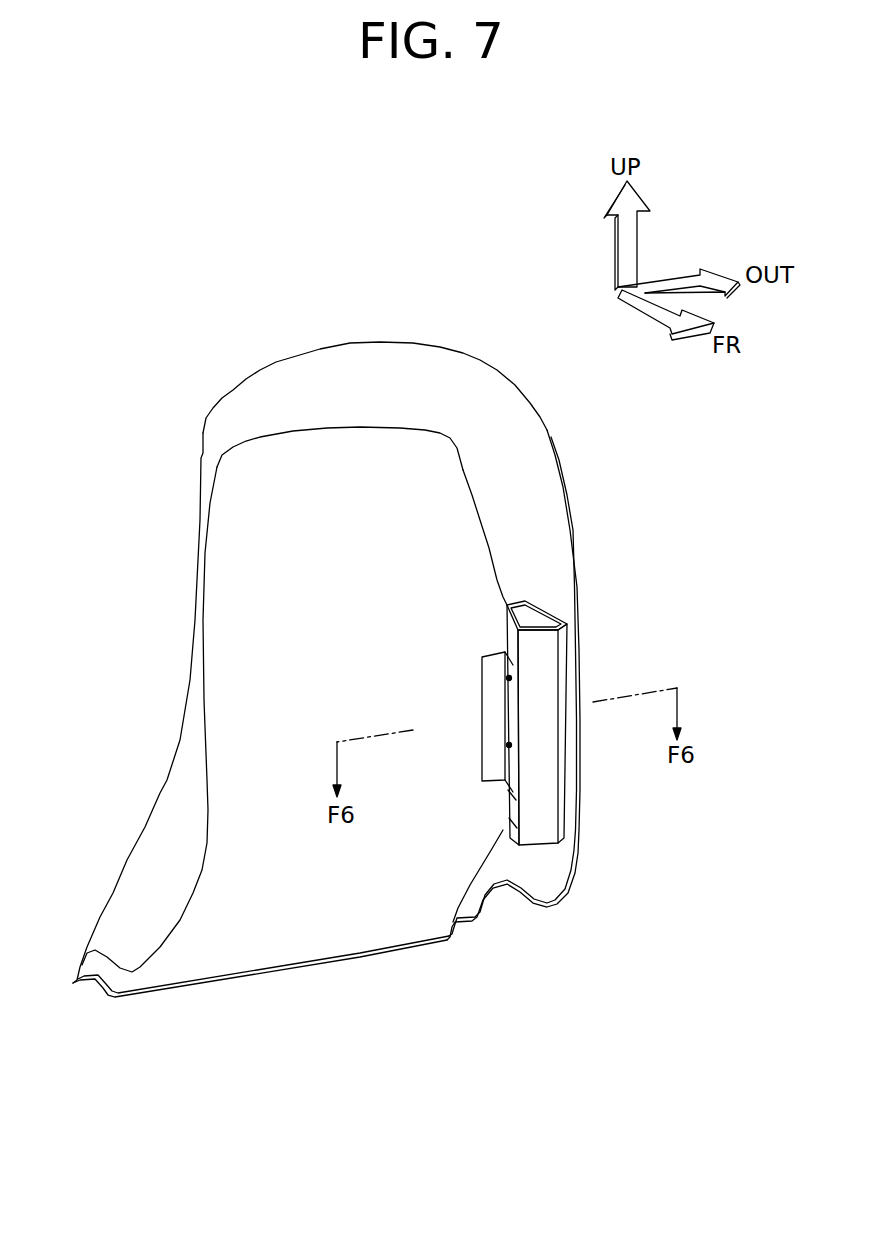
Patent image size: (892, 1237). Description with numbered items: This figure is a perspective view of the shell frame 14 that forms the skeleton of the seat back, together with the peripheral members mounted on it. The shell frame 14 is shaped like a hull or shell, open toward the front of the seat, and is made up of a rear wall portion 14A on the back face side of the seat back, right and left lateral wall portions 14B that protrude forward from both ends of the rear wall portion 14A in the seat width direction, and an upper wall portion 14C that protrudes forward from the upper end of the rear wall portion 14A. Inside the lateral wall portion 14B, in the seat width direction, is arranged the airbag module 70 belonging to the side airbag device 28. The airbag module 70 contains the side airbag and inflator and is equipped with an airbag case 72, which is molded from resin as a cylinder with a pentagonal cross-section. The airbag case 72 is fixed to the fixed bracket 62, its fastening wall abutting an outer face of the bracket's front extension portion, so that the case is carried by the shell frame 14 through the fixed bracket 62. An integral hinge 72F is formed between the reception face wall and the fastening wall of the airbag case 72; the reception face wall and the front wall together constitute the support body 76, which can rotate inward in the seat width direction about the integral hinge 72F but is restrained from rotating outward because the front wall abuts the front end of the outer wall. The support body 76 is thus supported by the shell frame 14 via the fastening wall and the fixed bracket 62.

The shell frame 14 is at (190, 657).
The rear wall portion 14A is at (340, 933).
The lateral wall portion 14B is at (193, 895).
The upper wall portion 14C is at (350, 363).
The side airbag device 28 is at (550, 597).
The fixed bracket 62 is at (508, 708).
The airbag module 70 is at (565, 720).
The airbag case 72 is at (572, 660).
The integral hinge 72F is at (513, 807).
The support body 76 is at (540, 762).